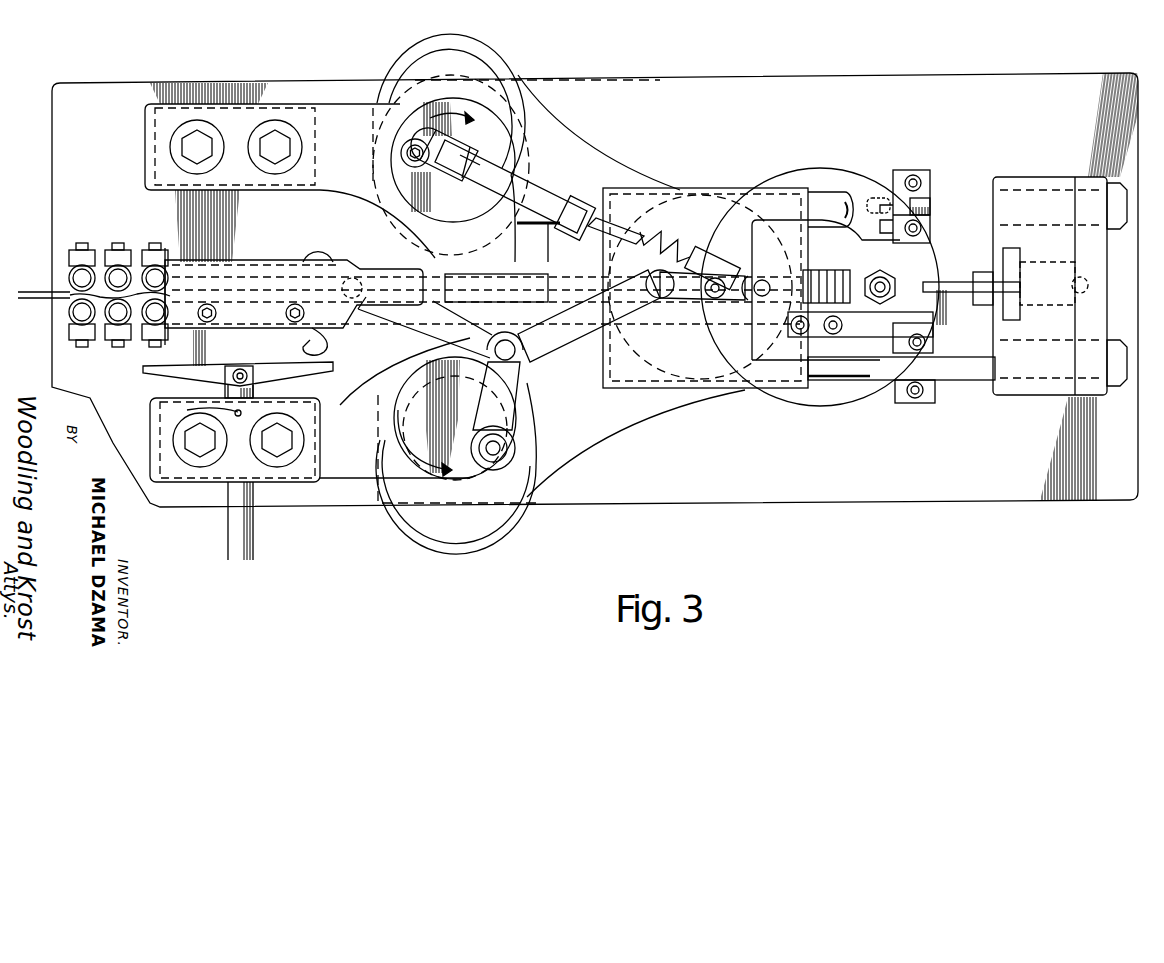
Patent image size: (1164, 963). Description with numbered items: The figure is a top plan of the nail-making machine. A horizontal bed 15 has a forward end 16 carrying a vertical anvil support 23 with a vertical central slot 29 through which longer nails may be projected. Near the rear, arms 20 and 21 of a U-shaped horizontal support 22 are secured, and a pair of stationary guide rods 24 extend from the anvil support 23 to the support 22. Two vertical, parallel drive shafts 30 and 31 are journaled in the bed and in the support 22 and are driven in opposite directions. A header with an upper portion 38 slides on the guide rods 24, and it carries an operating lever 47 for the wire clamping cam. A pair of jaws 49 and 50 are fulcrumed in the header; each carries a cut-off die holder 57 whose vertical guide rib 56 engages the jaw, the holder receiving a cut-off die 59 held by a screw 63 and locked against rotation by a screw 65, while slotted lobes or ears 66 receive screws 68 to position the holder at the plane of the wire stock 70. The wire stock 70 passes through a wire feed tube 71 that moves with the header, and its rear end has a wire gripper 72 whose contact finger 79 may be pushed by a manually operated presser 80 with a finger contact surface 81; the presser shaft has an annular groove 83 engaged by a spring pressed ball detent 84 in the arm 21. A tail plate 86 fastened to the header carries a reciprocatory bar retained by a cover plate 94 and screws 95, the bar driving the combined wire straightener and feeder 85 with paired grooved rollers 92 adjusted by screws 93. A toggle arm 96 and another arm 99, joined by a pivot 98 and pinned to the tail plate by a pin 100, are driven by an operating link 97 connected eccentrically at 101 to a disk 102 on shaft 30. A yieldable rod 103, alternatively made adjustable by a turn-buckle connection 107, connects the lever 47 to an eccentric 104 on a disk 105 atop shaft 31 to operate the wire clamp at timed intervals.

The horizontal bed 15 is at (808, 485).
The forward end 16 is at (1105, 487).
The arm 20 is at (338, 110).
The arm 21 is at (338, 473).
The U-shaped horizontal support 22 is at (432, 252).
The vertical anvil support 23 is at (1030, 178).
The stationary guide rods 24 is at (820, 190).
The vertical central slot 29 is at (1042, 262).
The drive shaft 30 is at (460, 445).
The drive shaft 31 is at (470, 162).
The upper portion of header 38 is at (710, 200).
The operating lever 47 is at (835, 285).
The jaw 49 is at (630, 412).
The jaw 50 is at (590, 185).
The vertical guide rib 56 is at (880, 200).
The cut-off die holder 57 is at (930, 176).
The cut-off die 59 is at (932, 258).
The screw 63 is at (921, 229).
The screw 65 is at (913, 176).
The lobes or ears 66 is at (903, 200).
The screws 68 is at (932, 205).
The wire stock 70 is at (34, 292).
The wire feed tube 71 is at (430, 310).
The wire gripper 72 is at (320, 256).
The contact finger 79 is at (324, 347).
The manually operated presser 80 is at (285, 372).
The finger contact surface 81 is at (200, 336).
The annular groove 83 is at (212, 483).
The spring pressed ball detent 84 is at (199, 417).
The combined wire straightener and wire feeder 85 is at (70, 316).
The tail plate 86 is at (697, 310).
The wire engaging grooved rollers 92 is at (64, 272).
The screws 93 is at (88, 245).
The cover plate 94 is at (253, 318).
The screws 95 is at (212, 306).
The toggle arm 96 is at (480, 330).
The operating link 97 is at (500, 405).
The pivot 98 is at (520, 356).
The toggle arm 99 is at (575, 318).
The pin 100 is at (655, 298).
The eccentric connection 101 is at (500, 448).
The disk 102 is at (403, 417).
The yieldable rod 103 is at (532, 190).
The eccentric 104 is at (403, 152).
The disk 105 is at (418, 120).
The turn-buckle connection 107 is at (617, 200).